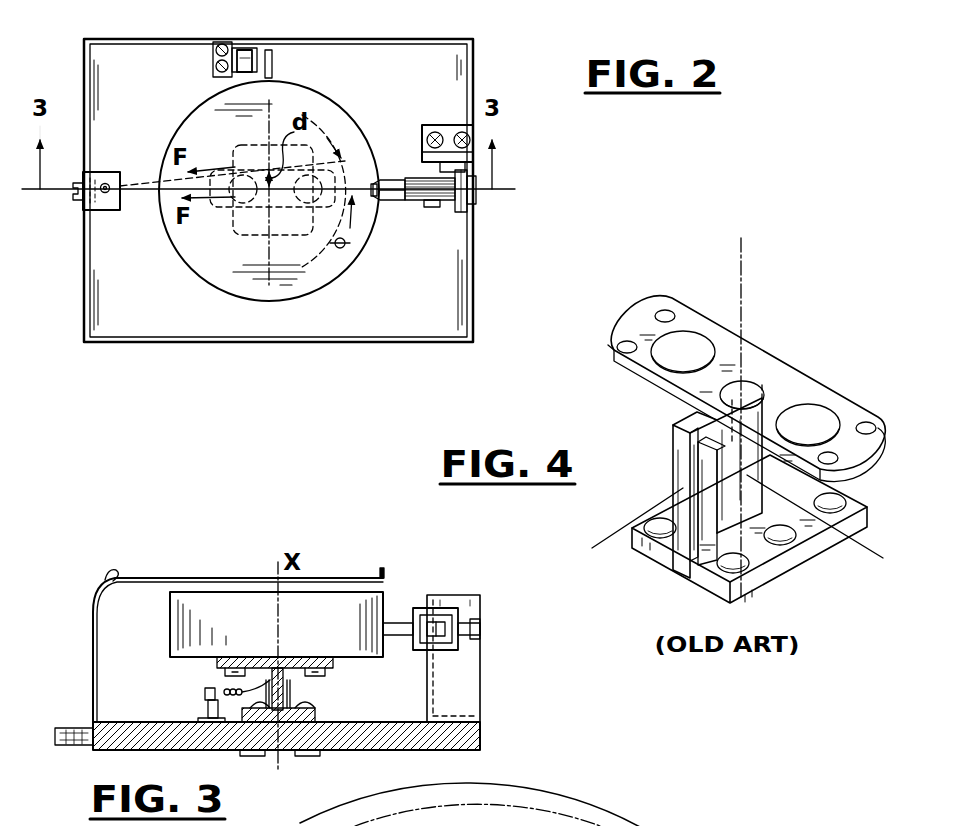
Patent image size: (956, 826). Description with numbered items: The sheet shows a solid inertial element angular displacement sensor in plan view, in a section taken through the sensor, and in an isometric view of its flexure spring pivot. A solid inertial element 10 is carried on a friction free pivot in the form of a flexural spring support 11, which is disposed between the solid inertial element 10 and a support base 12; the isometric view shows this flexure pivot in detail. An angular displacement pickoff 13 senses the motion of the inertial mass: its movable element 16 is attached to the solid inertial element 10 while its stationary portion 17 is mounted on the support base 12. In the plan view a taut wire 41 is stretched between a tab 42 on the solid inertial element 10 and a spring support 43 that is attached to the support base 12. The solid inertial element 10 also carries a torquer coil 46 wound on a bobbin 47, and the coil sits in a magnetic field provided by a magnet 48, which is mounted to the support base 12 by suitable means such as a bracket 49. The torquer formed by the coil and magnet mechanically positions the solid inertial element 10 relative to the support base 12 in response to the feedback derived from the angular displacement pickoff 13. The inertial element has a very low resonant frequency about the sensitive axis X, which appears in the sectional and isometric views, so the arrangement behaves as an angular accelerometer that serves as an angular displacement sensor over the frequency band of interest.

In FIG. 2, the solid inertial element 10 is at (183, 128).
In FIG. 3, the solid inertial element 10 is at (168, 592).
In FIG. 3, the flexural spring support 11 is at (290, 690).
In FIG. 4, the flexural spring support 11 is at (803, 372).
In FIG. 2, the support base 12 is at (400, 39).
In FIG. 3, the support base 12 is at (482, 740).
In FIG. 2, the angular displacement pickoff 13 is at (262, 44).
In FIG. 2, the movable element 16 is at (272, 52).
In FIG. 2, the stationary portion 17 is at (213, 48).
In FIG. 2, the taut wire 41 is at (326, 120).
In FIG. 3, the taut wire 41 is at (236, 592).
In FIG. 2, the tab 42 is at (382, 203).
In FIG. 3, the tab 42 is at (384, 574).
In FIG. 2, the spring support 43 is at (100, 212).
In FIG. 3, the spring support 43 is at (96, 604).
In FIG. 2, the torquer coil 46 is at (420, 203).
In FIG. 2, the bobbin 47 is at (465, 214).
In FIG. 3, the bobbin 47 is at (460, 613).
In FIG. 2, the magnet 48 is at (478, 204).
In FIG. 3, the magnet 48 is at (481, 634).
In FIG. 2, the bracket 49 is at (446, 125).
In FIG. 3, the bracket 49 is at (481, 696).